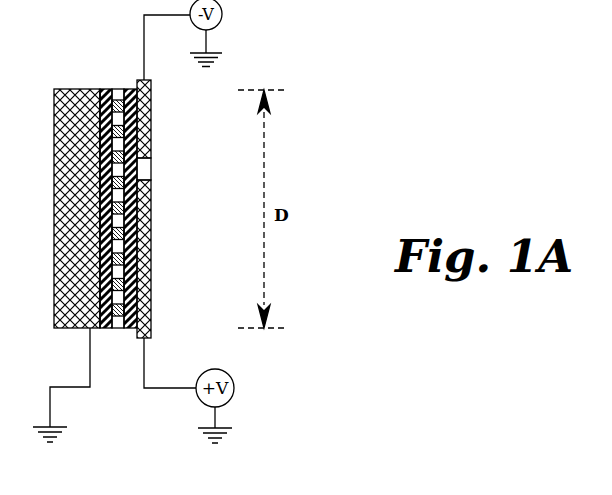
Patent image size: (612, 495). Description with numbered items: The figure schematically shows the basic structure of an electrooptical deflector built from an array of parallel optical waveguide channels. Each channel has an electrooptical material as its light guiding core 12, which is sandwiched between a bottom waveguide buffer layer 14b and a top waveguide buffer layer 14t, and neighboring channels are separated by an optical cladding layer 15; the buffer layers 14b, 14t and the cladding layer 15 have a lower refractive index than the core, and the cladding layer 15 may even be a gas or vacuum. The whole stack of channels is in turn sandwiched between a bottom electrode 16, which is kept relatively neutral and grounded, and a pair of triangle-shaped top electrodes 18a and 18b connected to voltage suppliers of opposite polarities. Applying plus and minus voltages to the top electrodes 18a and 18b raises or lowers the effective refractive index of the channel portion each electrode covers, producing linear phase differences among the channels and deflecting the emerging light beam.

The light guiding core 12 is at (118, 329).
The bottom waveguide buffer layer 14b is at (106, 89).
The top waveguide buffer layer 14t is at (128, 89).
The optical cladding layer 15 is at (100, 145).
The bottom electrode 16 is at (54, 282).
The top electrode 18a is at (151, 265).
The top electrode 18b is at (151, 123).